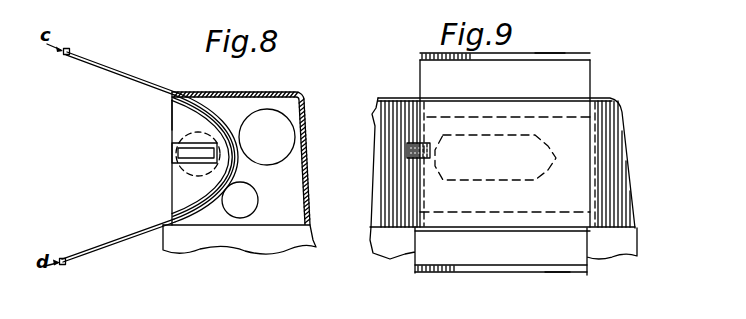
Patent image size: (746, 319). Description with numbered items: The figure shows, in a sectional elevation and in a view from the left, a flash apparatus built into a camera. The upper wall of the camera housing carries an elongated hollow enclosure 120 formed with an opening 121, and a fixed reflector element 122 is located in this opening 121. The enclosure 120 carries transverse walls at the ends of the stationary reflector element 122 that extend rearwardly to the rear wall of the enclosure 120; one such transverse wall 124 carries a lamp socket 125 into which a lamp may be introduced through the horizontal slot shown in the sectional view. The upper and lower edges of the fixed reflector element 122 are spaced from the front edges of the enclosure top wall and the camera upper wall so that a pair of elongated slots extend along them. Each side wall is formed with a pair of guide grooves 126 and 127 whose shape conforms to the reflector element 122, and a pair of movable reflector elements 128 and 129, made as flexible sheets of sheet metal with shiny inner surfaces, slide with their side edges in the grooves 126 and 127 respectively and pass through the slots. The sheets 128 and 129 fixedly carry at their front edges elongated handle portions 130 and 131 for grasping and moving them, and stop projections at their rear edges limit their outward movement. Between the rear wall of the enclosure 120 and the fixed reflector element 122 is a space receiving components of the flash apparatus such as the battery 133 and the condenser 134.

In FIG. 8, the hollow enclosure 120 is at (309, 99).
In FIG. 9, the hollow enclosure 120 is at (650, 81).
In FIG. 8, the opening 121 is at (166, 194).
In FIG. 8, the fixed reflector element 122 is at (203, 114).
In FIG. 8, the transverse wall 124 is at (172, 112).
In FIG. 8, the lamp socket 125 is at (174, 147).
In FIG. 9, the lamp socket 125 is at (424, 162).
In FIG. 8, the guide groove 126 is at (208, 122).
In FIG. 8, the guide groove 127 is at (217, 104).
In FIG. 8, the movable reflector element 128 is at (120, 68).
In FIG. 9, the movable reflector element 128 is at (574, 80).
In FIG. 8, the movable reflector element 129 is at (125, 245).
In FIG. 9, the movable reflector element 129 is at (577, 250).
In FIG. 8, the handle portion 130 is at (68, 47).
In FIG. 9, the handle portion 130 is at (547, 54).
In FIG. 8, the handle portion 131 is at (65, 267).
In FIG. 9, the handle portion 131 is at (556, 273).
In FIG. 8, the battery 133 is at (285, 140).
In FIG. 8, the condenser 134 is at (243, 210).